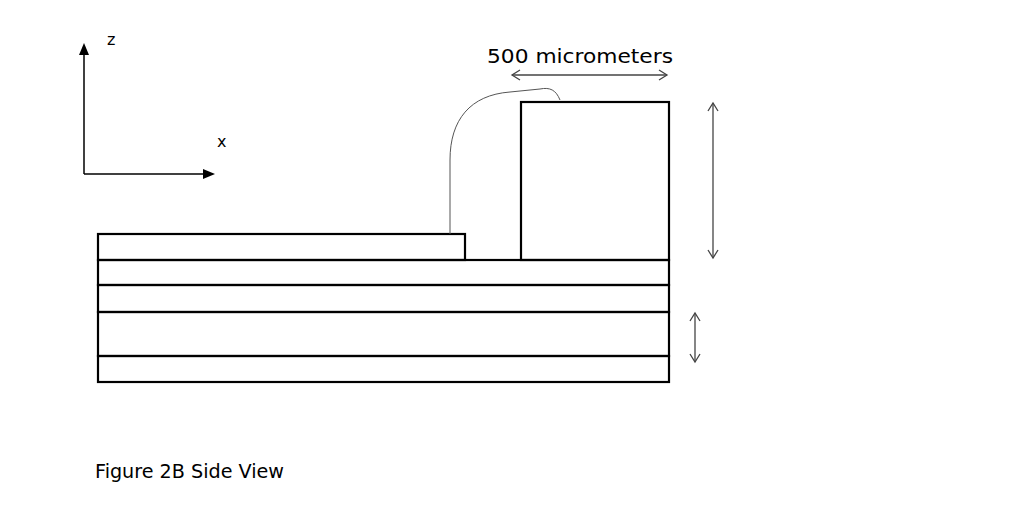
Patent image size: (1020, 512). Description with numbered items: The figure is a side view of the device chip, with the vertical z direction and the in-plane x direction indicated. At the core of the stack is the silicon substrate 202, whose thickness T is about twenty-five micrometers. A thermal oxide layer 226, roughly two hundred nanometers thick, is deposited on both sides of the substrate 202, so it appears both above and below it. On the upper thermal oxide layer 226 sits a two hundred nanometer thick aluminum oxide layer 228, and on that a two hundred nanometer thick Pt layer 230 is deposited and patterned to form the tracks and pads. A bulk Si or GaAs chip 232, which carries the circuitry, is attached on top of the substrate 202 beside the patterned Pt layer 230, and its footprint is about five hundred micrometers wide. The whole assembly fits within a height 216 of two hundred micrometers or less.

The Pt layer 230 is at (447, 172).
The aluminum oxide layer 228 is at (383, 272).
The thermal oxide layer 226 is at (383, 333).
The substrate 202 is at (383, 334).
The chip 232 is at (595, 181).
The height 216 is at (714, 145).
The thickness T is at (696, 337).